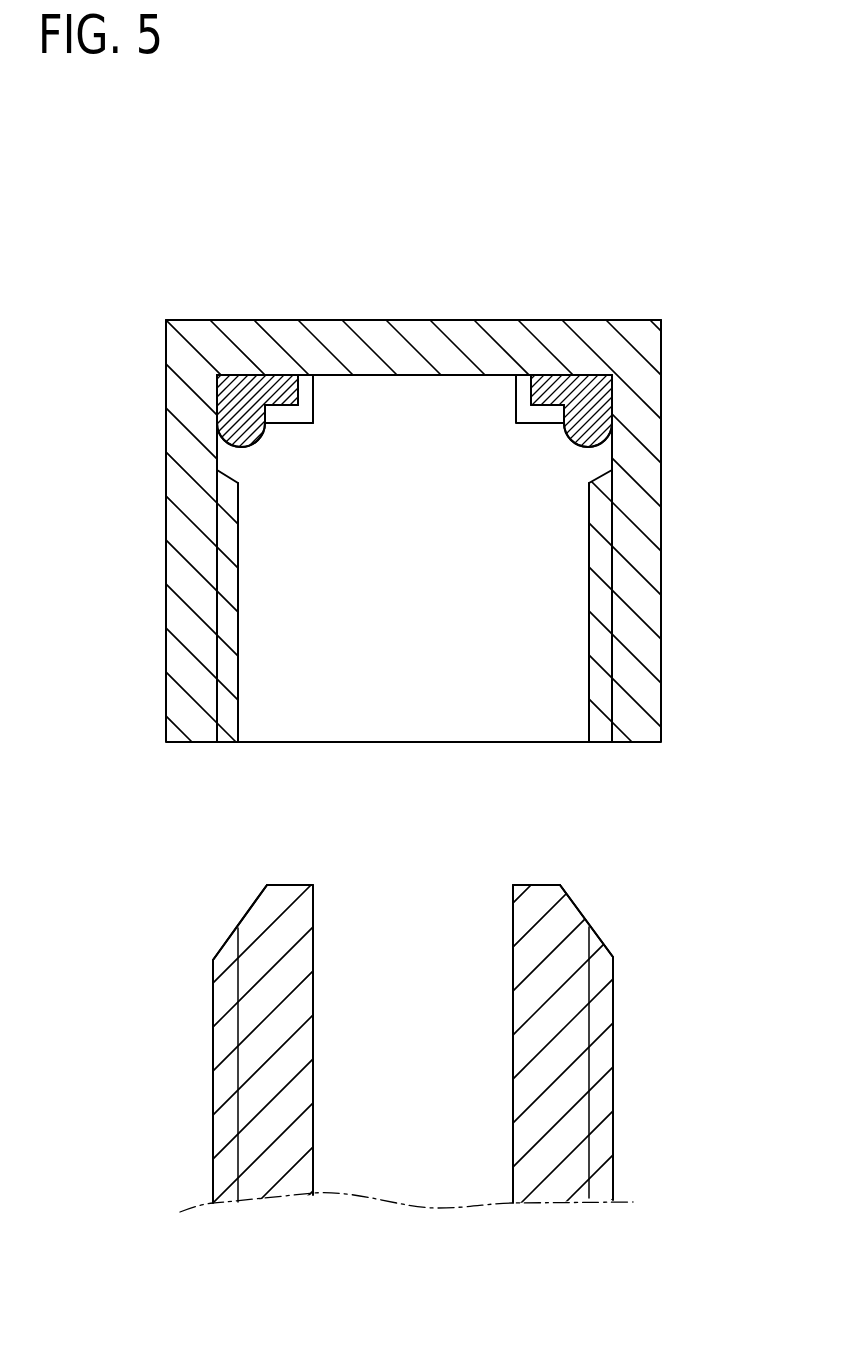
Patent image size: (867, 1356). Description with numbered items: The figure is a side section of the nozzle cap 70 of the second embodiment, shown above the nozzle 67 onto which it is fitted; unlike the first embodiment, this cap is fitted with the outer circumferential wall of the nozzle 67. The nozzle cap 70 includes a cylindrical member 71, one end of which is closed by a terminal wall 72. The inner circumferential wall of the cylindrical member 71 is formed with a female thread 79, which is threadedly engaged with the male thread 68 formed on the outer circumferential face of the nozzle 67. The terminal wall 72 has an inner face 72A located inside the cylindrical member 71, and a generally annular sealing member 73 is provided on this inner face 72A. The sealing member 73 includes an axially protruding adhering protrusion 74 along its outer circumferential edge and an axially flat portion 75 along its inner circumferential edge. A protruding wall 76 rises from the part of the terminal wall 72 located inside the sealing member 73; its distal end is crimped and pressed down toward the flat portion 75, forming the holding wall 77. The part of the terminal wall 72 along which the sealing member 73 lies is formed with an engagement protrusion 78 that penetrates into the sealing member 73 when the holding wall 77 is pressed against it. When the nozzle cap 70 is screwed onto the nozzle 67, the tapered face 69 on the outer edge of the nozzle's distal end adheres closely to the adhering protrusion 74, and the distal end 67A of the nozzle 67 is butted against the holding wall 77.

The nozzle cap 70 is at (124, 301).
The cylindrical member 71 is at (640, 643).
The terminal wall 72 is at (425, 332).
The inner face 72A is at (447, 375).
The sealing member 73 is at (756, 433).
The adhering protrusion 74 is at (598, 448).
The flat portion 75 is at (527, 417).
The protruding wall 76 is at (320, 385).
The holding wall 77 is at (283, 417).
The engagement protrusion 78 is at (263, 382).
The female thread 79 is at (227, 655).
The nozzle 67 is at (179, 917).
The distal end 67A is at (540, 883).
The male thread 68 is at (602, 1063).
The tapered face 69 is at (580, 917).